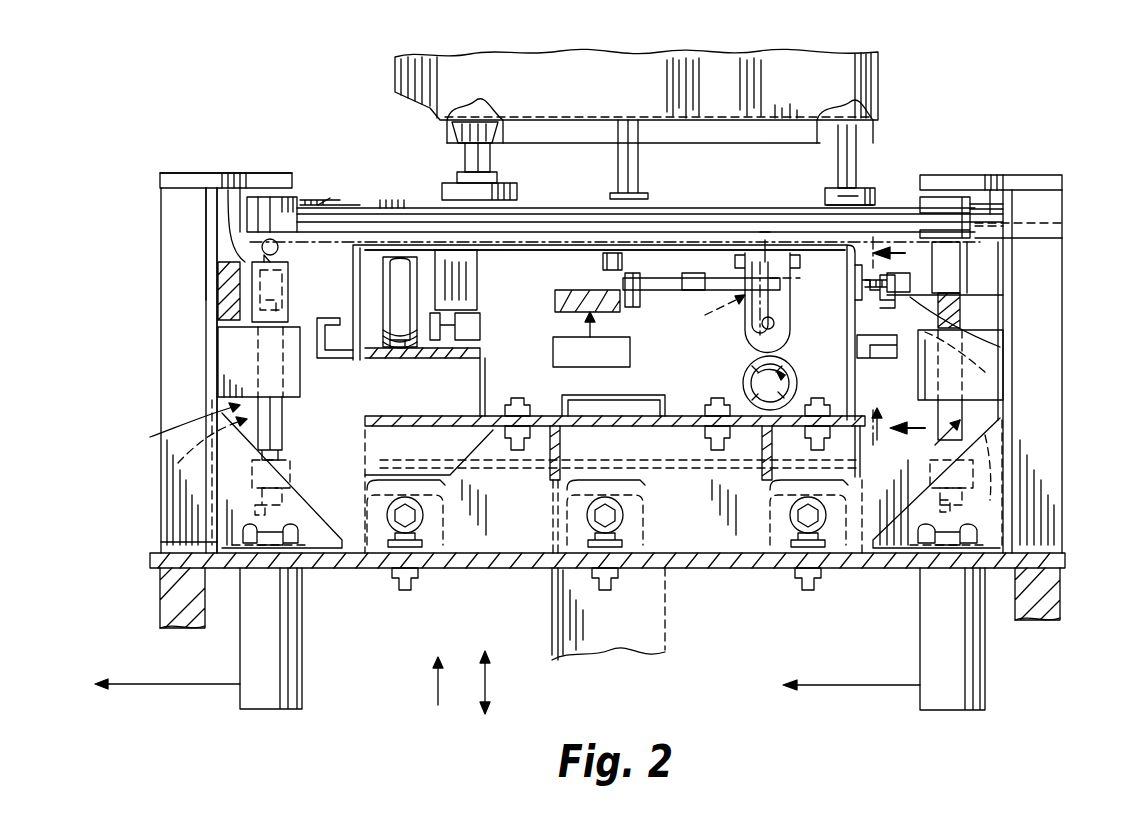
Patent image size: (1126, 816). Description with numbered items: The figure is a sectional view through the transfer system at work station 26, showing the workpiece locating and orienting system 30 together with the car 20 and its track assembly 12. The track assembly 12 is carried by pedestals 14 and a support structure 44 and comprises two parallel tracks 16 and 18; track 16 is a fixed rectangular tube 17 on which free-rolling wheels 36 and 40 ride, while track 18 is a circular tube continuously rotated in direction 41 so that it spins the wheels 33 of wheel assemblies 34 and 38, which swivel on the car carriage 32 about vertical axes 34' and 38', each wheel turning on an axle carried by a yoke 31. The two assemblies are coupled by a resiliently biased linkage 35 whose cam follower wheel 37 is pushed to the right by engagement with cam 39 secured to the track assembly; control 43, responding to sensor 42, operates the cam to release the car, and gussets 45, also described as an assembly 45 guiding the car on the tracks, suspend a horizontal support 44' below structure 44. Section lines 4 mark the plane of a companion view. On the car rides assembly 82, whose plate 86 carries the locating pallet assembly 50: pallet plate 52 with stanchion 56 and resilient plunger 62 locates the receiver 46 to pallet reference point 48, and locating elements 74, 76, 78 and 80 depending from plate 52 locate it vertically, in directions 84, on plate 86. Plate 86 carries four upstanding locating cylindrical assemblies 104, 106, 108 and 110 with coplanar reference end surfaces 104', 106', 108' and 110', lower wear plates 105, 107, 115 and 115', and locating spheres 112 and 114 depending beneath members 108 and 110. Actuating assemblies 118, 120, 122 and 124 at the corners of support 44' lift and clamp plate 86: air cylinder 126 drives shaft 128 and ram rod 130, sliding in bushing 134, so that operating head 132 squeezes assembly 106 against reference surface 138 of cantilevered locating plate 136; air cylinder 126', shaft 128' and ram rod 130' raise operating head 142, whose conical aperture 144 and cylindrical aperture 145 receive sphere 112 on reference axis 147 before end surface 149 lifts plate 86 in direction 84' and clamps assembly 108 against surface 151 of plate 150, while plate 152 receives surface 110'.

The section line 4- 4 is at (910, 341).
The track assembly 12 is at (689, 365).
The pedestal 14 is at (553, 636).
The track 16 is at (470, 395).
The fixed rectangular tube 17 is at (391, 350).
The track 18 is at (792, 395).
The car 20 is at (748, 243).
The work station 26 is at (222, 101).
The workpiece locating and orienting system 30 is at (189, 141).
The yoke 31 is at (752, 280).
The car carriage 32 is at (512, 249).
The wheel 33 is at (756, 349).
The wheel assembly 34 is at (721, 237).
The vertical axis 34' is at (785, 241).
The resiliently biased linkage 35 is at (622, 281).
The wheel 36 is at (411, 350).
The cam follower wheel 37 is at (641, 306).
The wheel assembly 38 is at (718, 313).
The vertical axis 38' is at (801, 285).
The cam 39 is at (557, 292).
The wheel 40 is at (410, 268).
The direction 41 is at (745, 376).
The sensor 42 is at (882, 296).
The control 43 is at (553, 347).
The support structure 44 is at (613, 489).
The horizontal support 44' is at (706, 612).
The gusset 45 is at (496, 555).
The receiver 46 is at (870, 113).
The pallet reference point 48 is at (487, 140).
The locating pallet assembly 50 is at (375, 122).
The pallet plate 52 is at (567, 214).
The locating stanchion 56 is at (858, 150).
The resilient locating plunger 62 is at (491, 160).
The locating element 74 is at (480, 205).
The locating element 76 is at (458, 190).
The locating element 78 is at (845, 175).
The locating element 80 is at (828, 208).
The assembly 82 is at (340, 205).
The vertical directions 84 is at (501, 682).
The upward direction 84' is at (646, 558).
The plate 86 is at (262, 242).
The locating cylindrical assembly 104 is at (926, 202).
The reference end surface 104' is at (950, 165).
The lower wear plate 105 is at (1000, 239).
The locating cylindrical assembly 106 is at (1012, 214).
The reference end surface 106' is at (990, 165).
The lower wear plate 107 is at (1040, 229).
The locating cylindrical assembly 108 is at (168, 370).
The reference end surface 108' is at (288, 189).
The locating cylindrical assembly 110 is at (337, 183).
The reference end surface 110' is at (242, 186).
The locating sphere 112 is at (225, 266).
The locating sphere 114 is at (220, 295).
The lower wear plate 115 is at (251, 163).
The lower wear plate 115' is at (410, 182).
The actuating assembly 118 is at (978, 419).
The actuating assembly 120 is at (175, 440).
The actuating assembly 122 is at (1003, 466).
The actuating assembly 124 is at (195, 446).
The air cylinder 126 is at (924, 639).
The air cylinder 126' is at (300, 638).
The shaft 128 is at (985, 502).
The shaft 128' is at (286, 502).
The ram rod 130 is at (987, 365).
The ram rod 130' is at (297, 428).
The operating head 132 is at (968, 260).
The bushing 134 is at (1003, 388).
The cantilevered locating plate 136 is at (1075, 182).
The lower reference surface 138 is at (992, 190).
The operating head 142 is at (255, 318).
The conical aperture 144 is at (286, 283).
The circular cylindrical aperture 145 is at (259, 362).
The reference axis 147 is at (270, 197).
The end surface 149 is at (280, 259).
The cantilevered locating plate 150 is at (165, 181).
The lower reference surface 151 is at (206, 215).
The cantilevered locating plate 152 is at (182, 180).